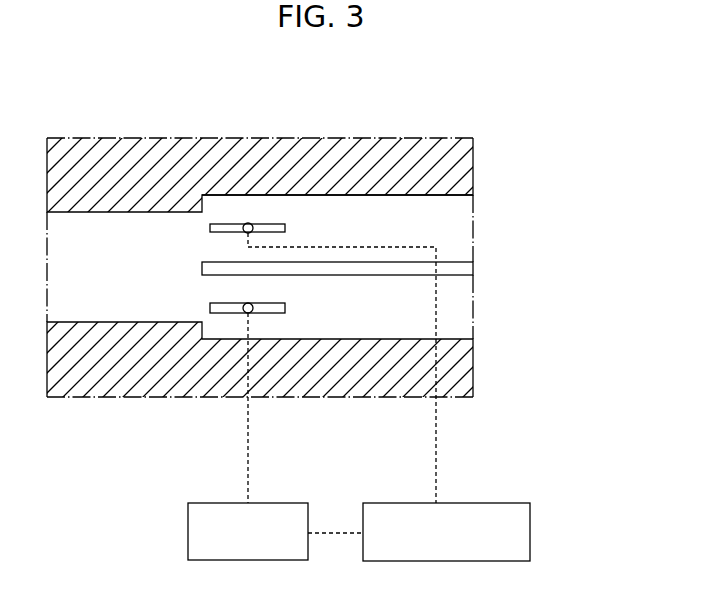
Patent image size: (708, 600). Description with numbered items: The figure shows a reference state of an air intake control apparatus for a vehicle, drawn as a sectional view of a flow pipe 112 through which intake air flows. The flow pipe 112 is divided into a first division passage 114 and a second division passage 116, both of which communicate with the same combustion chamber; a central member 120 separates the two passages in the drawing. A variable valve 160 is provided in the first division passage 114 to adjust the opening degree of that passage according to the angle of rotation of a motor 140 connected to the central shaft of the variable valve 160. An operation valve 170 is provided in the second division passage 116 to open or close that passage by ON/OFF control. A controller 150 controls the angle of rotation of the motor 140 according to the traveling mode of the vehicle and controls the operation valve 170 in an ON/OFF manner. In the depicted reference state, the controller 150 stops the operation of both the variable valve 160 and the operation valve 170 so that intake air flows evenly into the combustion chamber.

The flow pipe 112 is at (130, 262).
The first division passage 114 is at (343, 325).
The second division passage 116 is at (354, 213).
The center member 120 is at (337, 268).
The motor 140 is at (188, 537).
The controller 150 is at (530, 536).
The variable valve 160 is at (217, 313).
The operation valve 170 is at (271, 224).